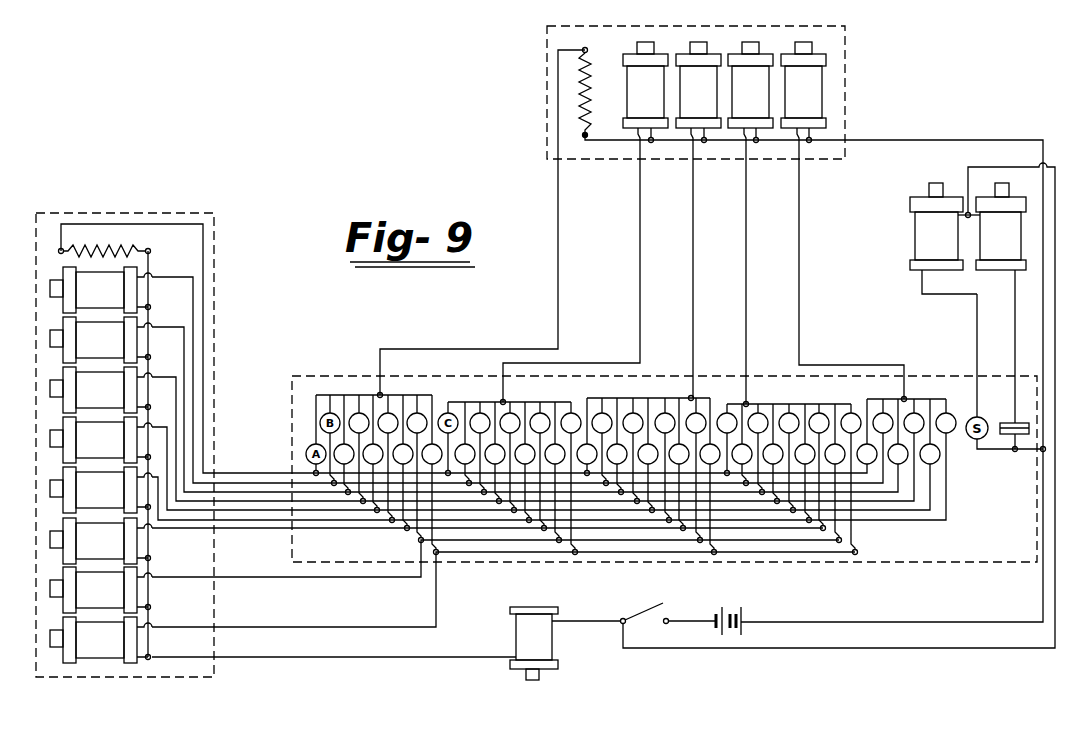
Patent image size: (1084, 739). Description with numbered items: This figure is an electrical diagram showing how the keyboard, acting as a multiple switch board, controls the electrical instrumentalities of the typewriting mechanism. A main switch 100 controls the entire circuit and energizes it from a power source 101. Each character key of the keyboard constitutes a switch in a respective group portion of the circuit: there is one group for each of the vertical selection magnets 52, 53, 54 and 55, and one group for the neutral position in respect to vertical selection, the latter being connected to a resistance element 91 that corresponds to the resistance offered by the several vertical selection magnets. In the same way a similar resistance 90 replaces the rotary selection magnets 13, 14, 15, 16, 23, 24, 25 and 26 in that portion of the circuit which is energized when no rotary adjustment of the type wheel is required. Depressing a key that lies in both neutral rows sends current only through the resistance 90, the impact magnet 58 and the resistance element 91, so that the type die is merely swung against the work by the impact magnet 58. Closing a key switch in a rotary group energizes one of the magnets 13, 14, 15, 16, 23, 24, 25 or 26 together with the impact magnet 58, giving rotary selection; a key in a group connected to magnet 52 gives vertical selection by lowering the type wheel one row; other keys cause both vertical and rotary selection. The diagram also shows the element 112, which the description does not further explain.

The resistance 90 is at (114, 243).
The resistance element 91 is at (578, 84).
The magnet 13 is at (93, 640).
The magnet 14 is at (93, 590).
The magnet 15 is at (93, 541).
The magnet 16 is at (93, 490).
The magnet 23 is at (93, 440).
The magnet 24 is at (93, 390).
The magnet 25 is at (93, 340).
The magnet 26 is at (93, 290).
The vertical selection magnet 52 is at (645, 92).
The vertical selection magnet 53 is at (698, 92).
The vertical selection magnet 54 is at (750, 92).
The vertical selection magnet 55 is at (803, 92).
The relays 112 is at (918, 248).
The impact magnet 58 is at (534, 643).
The main switch 100 is at (645, 604).
The power source 101 is at (731, 606).